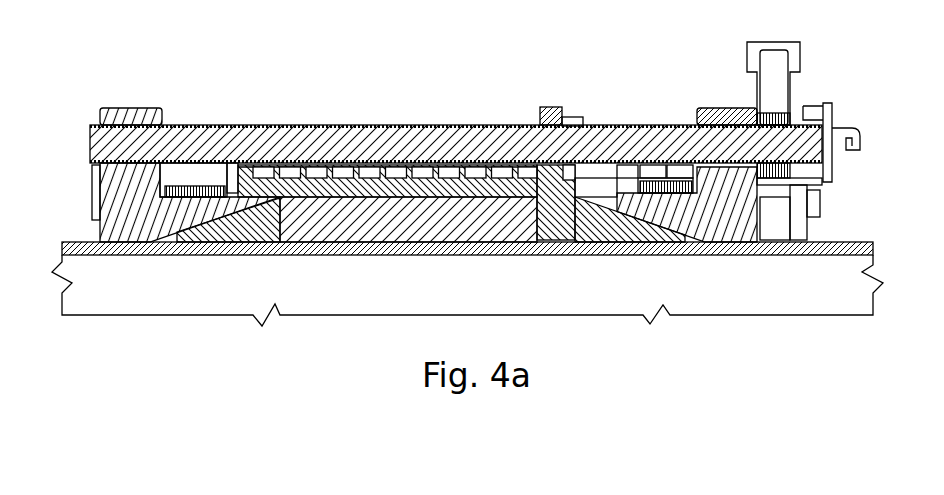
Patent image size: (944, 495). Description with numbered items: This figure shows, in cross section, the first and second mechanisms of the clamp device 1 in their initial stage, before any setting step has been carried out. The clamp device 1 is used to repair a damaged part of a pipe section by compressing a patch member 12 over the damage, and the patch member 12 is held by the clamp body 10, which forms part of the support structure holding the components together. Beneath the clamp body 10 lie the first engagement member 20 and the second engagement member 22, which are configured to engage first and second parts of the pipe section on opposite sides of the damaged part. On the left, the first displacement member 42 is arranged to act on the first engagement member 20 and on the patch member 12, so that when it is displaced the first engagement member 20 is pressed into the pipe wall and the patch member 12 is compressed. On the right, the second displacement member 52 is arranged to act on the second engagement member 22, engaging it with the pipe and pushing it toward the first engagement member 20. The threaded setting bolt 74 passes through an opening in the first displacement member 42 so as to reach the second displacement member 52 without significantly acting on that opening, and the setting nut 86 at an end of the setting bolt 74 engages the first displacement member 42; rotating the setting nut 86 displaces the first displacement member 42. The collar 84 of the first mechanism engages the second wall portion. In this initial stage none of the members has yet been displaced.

The clamp device 1 is at (93, 63).
The first displacement member 42 is at (133, 160).
The first engagement member 20 is at (243, 167).
The patch member 12 is at (407, 222).
The clamp body 10 is at (453, 187).
The collar 84 is at (569, 118).
The second engagement member 22 is at (638, 130).
The second displacement member 52 is at (664, 185).
The setting nut 86 is at (770, 112).
The setting bolt 74 is at (827, 110).